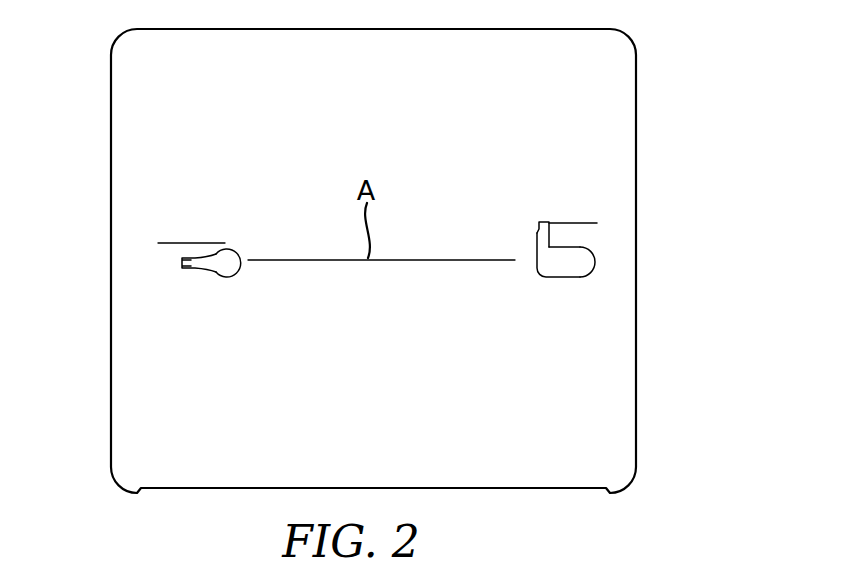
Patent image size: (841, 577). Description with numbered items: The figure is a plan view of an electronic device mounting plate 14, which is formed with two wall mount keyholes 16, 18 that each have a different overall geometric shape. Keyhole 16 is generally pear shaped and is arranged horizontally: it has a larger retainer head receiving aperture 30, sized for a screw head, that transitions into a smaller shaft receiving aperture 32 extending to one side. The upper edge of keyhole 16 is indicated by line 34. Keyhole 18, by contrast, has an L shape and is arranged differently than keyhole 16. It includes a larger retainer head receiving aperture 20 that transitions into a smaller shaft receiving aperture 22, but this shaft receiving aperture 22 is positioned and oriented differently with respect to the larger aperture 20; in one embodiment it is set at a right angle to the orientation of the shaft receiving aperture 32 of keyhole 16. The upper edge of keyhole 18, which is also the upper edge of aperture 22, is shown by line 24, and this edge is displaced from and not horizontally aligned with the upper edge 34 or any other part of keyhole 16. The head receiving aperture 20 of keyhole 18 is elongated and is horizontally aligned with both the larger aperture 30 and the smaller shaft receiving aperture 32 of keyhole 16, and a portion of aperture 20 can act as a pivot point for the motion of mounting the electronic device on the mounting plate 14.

The mounting plate 14 is at (610, 427).
The keyhole 16 is at (140, 263).
The keyhole 18 is at (624, 258).
The retainer head receiving aperture 20 is at (567, 265).
The shaft receiving aperture 22 is at (548, 236).
The line 24 is at (583, 223).
The retainer head receiving aperture 30 is at (222, 260).
The shaft receiving aperture 32 is at (183, 263).
The line 34 is at (177, 242).